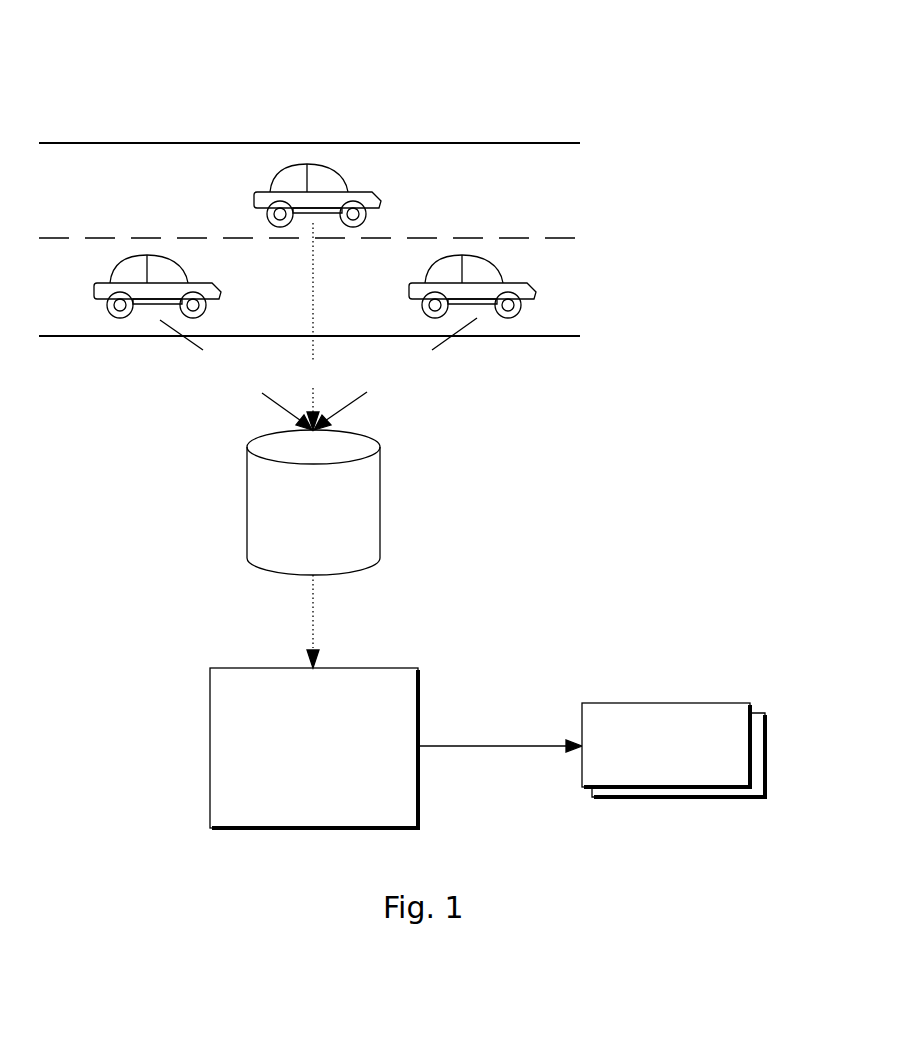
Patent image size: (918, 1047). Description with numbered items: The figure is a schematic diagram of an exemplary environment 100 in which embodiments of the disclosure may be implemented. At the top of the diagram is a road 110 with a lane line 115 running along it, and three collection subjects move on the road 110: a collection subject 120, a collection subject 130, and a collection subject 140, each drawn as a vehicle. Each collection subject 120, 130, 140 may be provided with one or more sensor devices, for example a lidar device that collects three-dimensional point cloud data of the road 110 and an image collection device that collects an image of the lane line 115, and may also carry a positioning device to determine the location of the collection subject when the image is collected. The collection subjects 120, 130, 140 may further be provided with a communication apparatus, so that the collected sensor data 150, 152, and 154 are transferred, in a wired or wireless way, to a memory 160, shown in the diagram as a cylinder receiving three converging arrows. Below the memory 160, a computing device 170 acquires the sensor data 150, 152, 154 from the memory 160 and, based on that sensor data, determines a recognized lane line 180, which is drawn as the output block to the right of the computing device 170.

The exemplary environment 100 is at (133, 62).
The road 110 is at (102, 185).
The lane line 115 is at (442, 238).
The collection subject 120 is at (193, 283).
The collection subject 130 is at (362, 192).
The collection subject 140 is at (517, 282).
The sensor data 150 is at (236, 375).
The sensor data 152 is at (315, 326).
The sensor data 154 is at (395, 374).
The memory 160 is at (380, 494).
The computing device 170 is at (385, 667).
The recognized lane line 180 is at (710, 703).